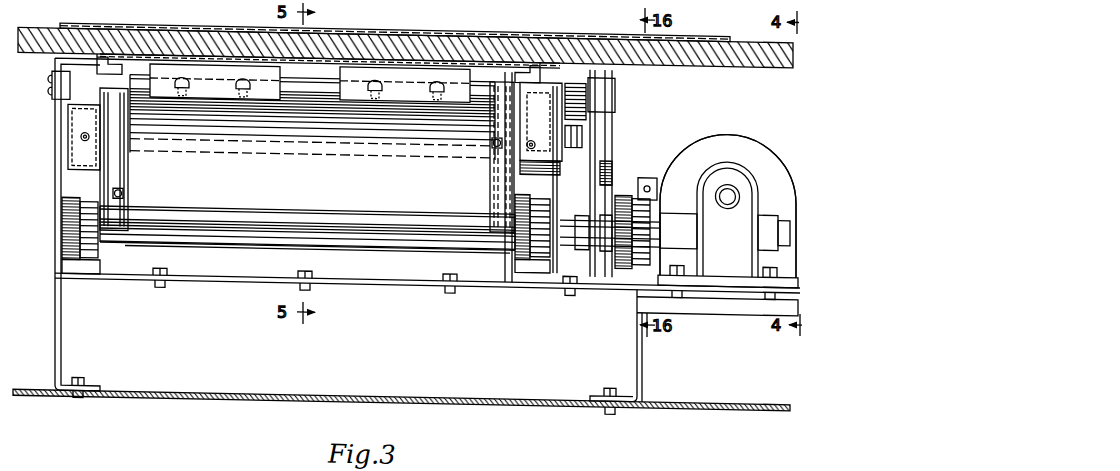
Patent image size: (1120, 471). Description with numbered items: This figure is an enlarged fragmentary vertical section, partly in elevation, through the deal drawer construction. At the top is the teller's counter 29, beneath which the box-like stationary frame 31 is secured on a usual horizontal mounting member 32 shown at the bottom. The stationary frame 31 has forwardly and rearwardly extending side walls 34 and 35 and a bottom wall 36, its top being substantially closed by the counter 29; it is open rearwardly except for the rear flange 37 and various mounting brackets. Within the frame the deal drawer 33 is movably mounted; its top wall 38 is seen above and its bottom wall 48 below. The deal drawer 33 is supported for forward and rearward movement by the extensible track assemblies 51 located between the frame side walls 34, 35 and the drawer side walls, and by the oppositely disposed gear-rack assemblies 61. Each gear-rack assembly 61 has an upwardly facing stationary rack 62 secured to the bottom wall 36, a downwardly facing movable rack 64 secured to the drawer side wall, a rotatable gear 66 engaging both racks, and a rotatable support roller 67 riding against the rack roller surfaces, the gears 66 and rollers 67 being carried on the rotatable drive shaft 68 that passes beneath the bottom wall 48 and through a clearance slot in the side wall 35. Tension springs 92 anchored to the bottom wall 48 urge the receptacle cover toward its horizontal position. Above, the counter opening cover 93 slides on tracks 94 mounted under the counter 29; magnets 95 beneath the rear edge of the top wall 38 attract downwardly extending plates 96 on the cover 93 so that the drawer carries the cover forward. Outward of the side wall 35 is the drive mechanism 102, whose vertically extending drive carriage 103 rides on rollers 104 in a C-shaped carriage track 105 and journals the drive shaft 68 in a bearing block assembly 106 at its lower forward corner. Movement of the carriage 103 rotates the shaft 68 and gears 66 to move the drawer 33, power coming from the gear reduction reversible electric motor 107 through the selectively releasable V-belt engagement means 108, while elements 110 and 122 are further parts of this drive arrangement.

The teller's counter 29 is at (693, 38).
The stationary frame 31 is at (378, 277).
The horizontal mounting member 32 is at (468, 393).
The deal drawer 33 is at (337, 243).
The stationary frame side wall 34 is at (60, 184).
The stationary frame side wall 35 is at (562, 157).
The bottom wall 36 is at (235, 277).
The rear flange 37 is at (552, 95).
The top wall 38 is at (312, 117).
The deal drawer bottom wall 48 is at (278, 204).
The extensible track assembly 51 is at (63, 128).
The gear-rack assembly 61 is at (100, 240).
The stationary rack 62 is at (75, 260).
The movable rack 64 is at (83, 178).
The rotatable gear 66 is at (85, 210).
The rotatable support roller 67 is at (72, 224).
The rotatable drive shaft 68 is at (200, 216).
The tension spring 92 is at (124, 191).
The counter opening cover 93 is at (330, 59).
The track 94 is at (97, 58).
The magnet 95 is at (265, 96).
The plate 96 is at (172, 94).
The deal drawer drive mechanism 102 is at (713, 128).
The drive carriage 103 is at (600, 114).
The roller 104 is at (588, 89).
The carriage track 105 is at (585, 125).
The bearing block assembly 106 is at (597, 248).
The gear reduction reversible electric motor 107 is at (742, 140).
The V-belt engagement means 108 is at (650, 164).
The drive gear 110 is at (642, 219).
The pinion 122 is at (620, 163).